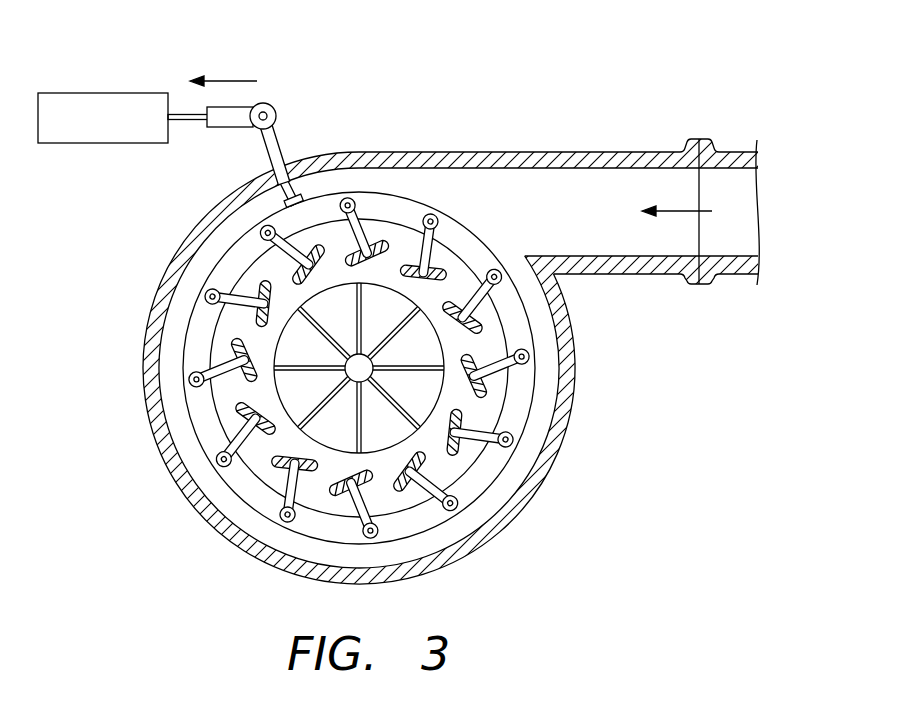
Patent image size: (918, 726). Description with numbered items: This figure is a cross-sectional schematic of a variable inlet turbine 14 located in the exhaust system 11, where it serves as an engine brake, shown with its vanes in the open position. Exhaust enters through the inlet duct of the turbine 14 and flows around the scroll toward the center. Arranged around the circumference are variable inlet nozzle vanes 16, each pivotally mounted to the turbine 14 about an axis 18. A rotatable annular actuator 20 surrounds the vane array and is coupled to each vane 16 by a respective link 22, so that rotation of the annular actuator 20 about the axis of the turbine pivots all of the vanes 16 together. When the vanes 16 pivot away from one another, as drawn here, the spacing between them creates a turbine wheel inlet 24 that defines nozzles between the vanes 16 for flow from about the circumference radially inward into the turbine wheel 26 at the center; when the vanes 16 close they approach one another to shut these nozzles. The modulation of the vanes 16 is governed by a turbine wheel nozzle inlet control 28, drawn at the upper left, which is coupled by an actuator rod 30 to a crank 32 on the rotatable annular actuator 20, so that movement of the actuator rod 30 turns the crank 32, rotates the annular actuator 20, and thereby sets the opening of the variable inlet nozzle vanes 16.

The exhaust system 11 is at (745, 148).
The variable inlet turbine 14 is at (430, 151).
The variable inlet nozzle vanes 16 is at (460, 457).
The axes 18 is at (372, 218).
The rotatable annular actuator 20 is at (237, 262).
The link 22 is at (366, 220).
The turbine wheel inlet 24 is at (252, 392).
The turbine wheel 26 is at (420, 392).
The turbine wheel nozzle inlet control 28 is at (107, 100).
The actuator rod 30 is at (187, 124).
The crank 32 is at (281, 136).